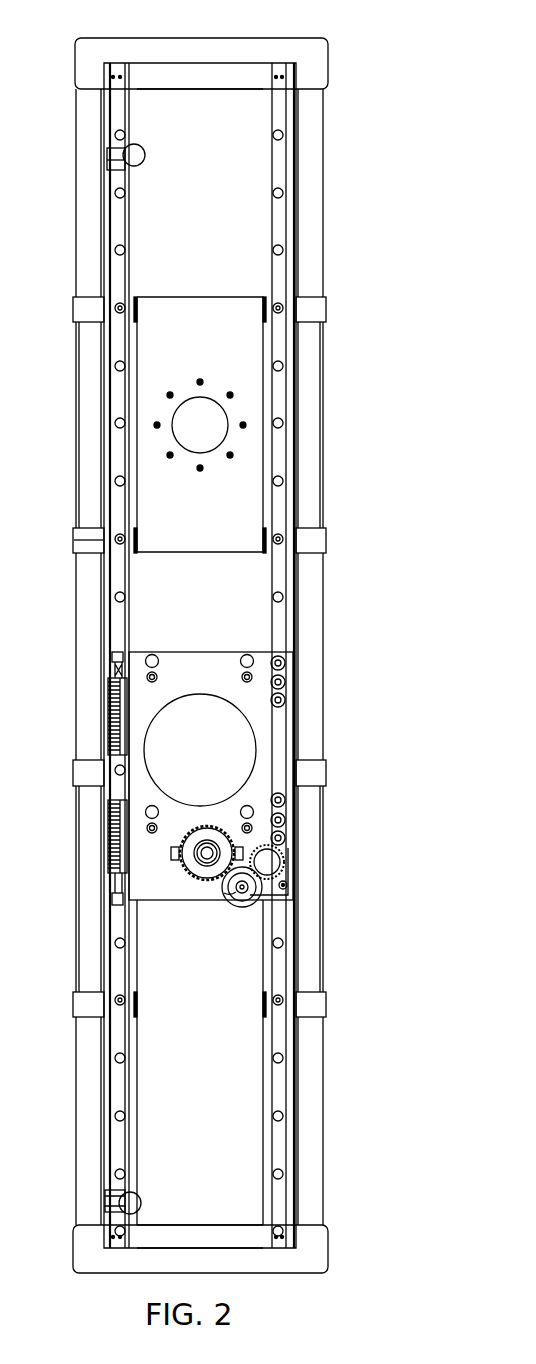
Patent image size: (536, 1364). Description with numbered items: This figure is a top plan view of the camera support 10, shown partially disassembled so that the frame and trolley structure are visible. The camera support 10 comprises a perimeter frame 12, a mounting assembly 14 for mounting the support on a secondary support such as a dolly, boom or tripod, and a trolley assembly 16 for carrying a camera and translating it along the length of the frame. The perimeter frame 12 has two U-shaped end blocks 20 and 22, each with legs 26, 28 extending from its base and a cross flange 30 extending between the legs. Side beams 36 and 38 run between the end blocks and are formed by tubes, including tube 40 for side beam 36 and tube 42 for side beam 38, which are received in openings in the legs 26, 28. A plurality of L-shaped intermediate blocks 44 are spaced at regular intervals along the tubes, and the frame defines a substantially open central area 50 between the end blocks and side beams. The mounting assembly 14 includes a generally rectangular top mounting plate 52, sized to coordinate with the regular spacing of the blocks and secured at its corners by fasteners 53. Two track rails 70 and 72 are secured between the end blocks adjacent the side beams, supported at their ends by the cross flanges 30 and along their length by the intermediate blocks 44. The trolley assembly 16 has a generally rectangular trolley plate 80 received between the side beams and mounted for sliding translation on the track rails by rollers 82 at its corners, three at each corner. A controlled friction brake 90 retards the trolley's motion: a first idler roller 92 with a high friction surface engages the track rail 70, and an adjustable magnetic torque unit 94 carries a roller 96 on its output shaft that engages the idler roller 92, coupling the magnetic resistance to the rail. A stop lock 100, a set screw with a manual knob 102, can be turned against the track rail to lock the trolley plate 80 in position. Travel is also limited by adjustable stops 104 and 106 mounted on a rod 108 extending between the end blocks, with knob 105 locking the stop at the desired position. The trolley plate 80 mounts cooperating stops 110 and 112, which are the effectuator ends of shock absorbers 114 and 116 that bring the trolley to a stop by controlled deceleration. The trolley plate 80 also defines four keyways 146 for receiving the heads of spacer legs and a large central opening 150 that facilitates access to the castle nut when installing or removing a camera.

The camera support 10 is at (64, 138).
The perimeter frame 12 is at (70, 191).
The mounting assembly 14 is at (197, 296).
The trolley assembly 16 is at (167, 910).
The end block 20 is at (232, 52).
The end block 22 is at (258, 1269).
The leg 26 is at (320, 75).
The leg 28 is at (78, 69).
The cross flange 30 is at (228, 1232).
The side beam 36 is at (316, 410).
The side beam 38 is at (86, 425).
The tube 40 is at (312, 238).
The tube 42 is at (86, 238).
The intermediate block 44 is at (83, 541).
The central area 50 is at (218, 1001).
The top mounting plate 52 is at (178, 546).
The fasteners 53 is at (273, 305).
The track rail 70 is at (284, 165).
The track rail 72 is at (120, 280).
The trolley plate 80 is at (277, 746).
The rollers 82 is at (287, 700).
The controlled friction brake 90 is at (204, 828).
The first idler roller 92 is at (241, 908).
The adjustable magnetic torque unit 94 is at (190, 876).
The roller 96 is at (205, 878).
The stop lock 100 is at (283, 851).
The manual knob 102 is at (282, 870).
The adjustable stop 104 is at (133, 150).
The knob 105 is at (145, 156).
The adjustable stop 106 is at (122, 1191).
The rod 108 is at (135, 1062).
The stop 110 is at (112, 900).
The stop 112 is at (112, 657).
The shock absorber 114 is at (112, 875).
The shock absorber 116 is at (112, 690).
The keyways 146 is at (243, 654).
The central opening 150 is at (166, 712).